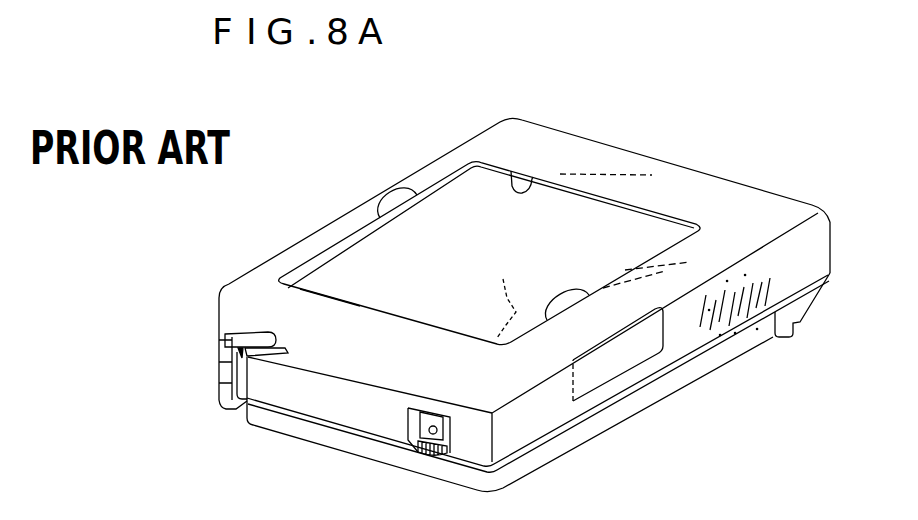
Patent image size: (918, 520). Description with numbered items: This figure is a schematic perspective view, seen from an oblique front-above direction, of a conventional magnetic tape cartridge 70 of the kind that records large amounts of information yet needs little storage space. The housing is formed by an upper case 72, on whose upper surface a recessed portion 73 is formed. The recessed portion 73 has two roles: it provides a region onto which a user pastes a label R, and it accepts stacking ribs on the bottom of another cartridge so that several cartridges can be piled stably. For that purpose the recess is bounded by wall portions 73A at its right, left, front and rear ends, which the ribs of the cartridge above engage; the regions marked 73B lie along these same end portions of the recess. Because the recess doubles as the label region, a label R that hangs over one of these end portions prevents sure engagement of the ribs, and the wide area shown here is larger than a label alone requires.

The magnetic tape cartridge 70 is at (742, 178).
The upper case 72 is at (818, 255).
The recessed portion 73 is at (593, 224).
The wall portions 73A is at (410, 213).
The notch of recess 73B is at (332, 297).
The label R is at (506, 294).